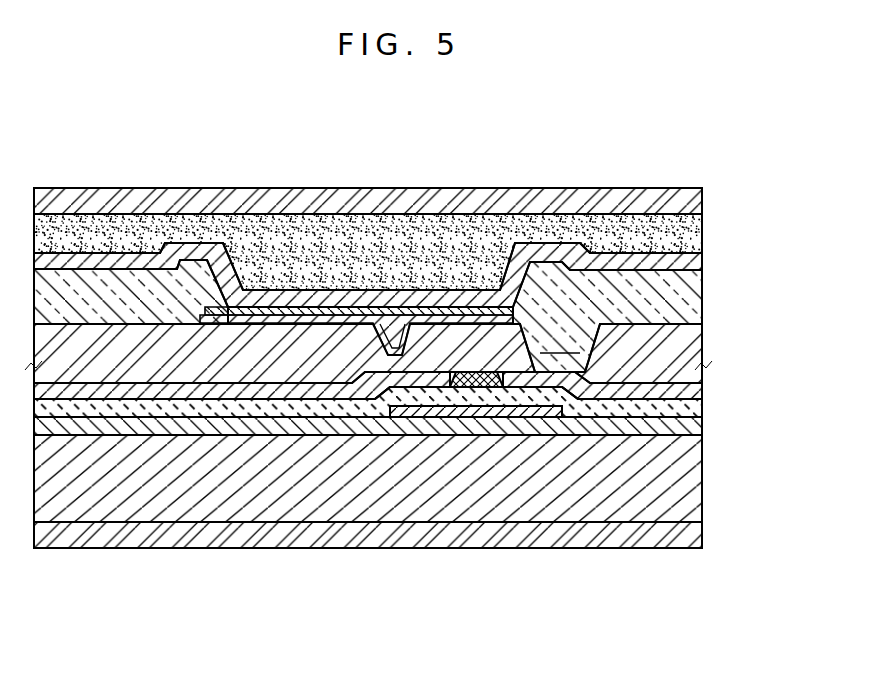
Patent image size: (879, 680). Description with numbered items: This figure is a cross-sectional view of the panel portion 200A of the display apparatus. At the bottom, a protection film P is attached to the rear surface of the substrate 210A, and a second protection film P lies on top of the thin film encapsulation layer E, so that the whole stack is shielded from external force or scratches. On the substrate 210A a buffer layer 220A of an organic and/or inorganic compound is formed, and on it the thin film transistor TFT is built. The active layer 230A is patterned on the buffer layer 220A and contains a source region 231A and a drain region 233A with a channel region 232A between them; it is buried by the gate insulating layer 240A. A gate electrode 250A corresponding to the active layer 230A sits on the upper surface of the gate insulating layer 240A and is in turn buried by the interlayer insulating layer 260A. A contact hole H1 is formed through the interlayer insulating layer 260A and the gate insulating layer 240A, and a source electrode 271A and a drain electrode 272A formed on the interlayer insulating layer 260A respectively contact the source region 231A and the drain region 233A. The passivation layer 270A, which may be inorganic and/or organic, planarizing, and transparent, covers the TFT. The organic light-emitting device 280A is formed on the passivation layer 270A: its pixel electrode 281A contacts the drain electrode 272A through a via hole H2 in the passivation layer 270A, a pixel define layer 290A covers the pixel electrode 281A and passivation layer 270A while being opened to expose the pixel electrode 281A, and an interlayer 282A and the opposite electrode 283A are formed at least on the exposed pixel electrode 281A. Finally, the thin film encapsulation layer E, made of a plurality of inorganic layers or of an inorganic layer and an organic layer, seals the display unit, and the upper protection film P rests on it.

The panel portion 200A is at (128, 124).
The protection film P is at (704, 201).
The thin film encapsulation layer E is at (704, 233).
The organic light-emitting device 280A is at (368, 229).
The pixel electrode 281A is at (400, 140).
The interlayer 282A is at (323, 312).
The opposite electrode 283A is at (373, 300).
The pixel define layer 290A is at (697, 288).
The passivation layer 270A is at (704, 357).
The source electrode 271A is at (522, 350).
The drain electrode 272A is at (405, 343).
The contact hole H1 is at (594, 336).
The via hole H2 is at (398, 337).
The interlayer insulating layer 260A is at (704, 386).
The gate electrode 250A is at (487, 372).
The gate insulating layer 240A is at (704, 405).
The active layer 230A is at (414, 395).
The source region 231A is at (540, 408).
The channel region 232A is at (480, 417).
The drain region 233A is at (417, 398).
The buffer layer 220A is at (704, 428).
The substrate 210A is at (704, 490).
The thin film transistor TFT is at (599, 346).